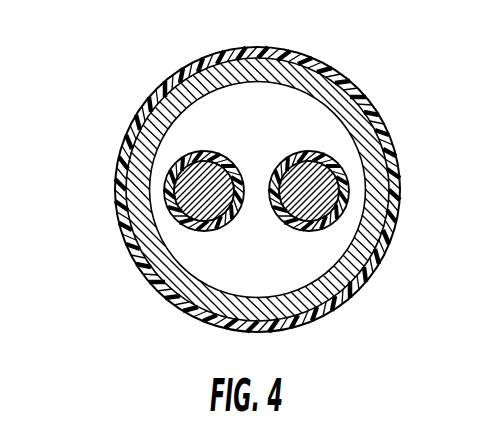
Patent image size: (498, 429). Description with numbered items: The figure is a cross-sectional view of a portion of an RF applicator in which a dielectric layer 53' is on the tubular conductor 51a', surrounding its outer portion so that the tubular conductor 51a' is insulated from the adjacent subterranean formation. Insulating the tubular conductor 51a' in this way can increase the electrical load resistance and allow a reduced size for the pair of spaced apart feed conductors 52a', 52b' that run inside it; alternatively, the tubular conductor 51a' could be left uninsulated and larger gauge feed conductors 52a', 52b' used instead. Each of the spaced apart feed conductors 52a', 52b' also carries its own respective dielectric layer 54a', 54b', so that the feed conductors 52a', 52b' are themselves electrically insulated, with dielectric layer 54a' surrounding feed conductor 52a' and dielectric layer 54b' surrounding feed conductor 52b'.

The dielectric layer 53' is at (230, 189).
The tubular conductor 51a' is at (213, 189).
The dielectric layer 54a' is at (319, 127).
The dielectric layer 54b' is at (194, 121).
The feed conductor 52a' is at (366, 174).
The feed conductor 52b' is at (149, 239).